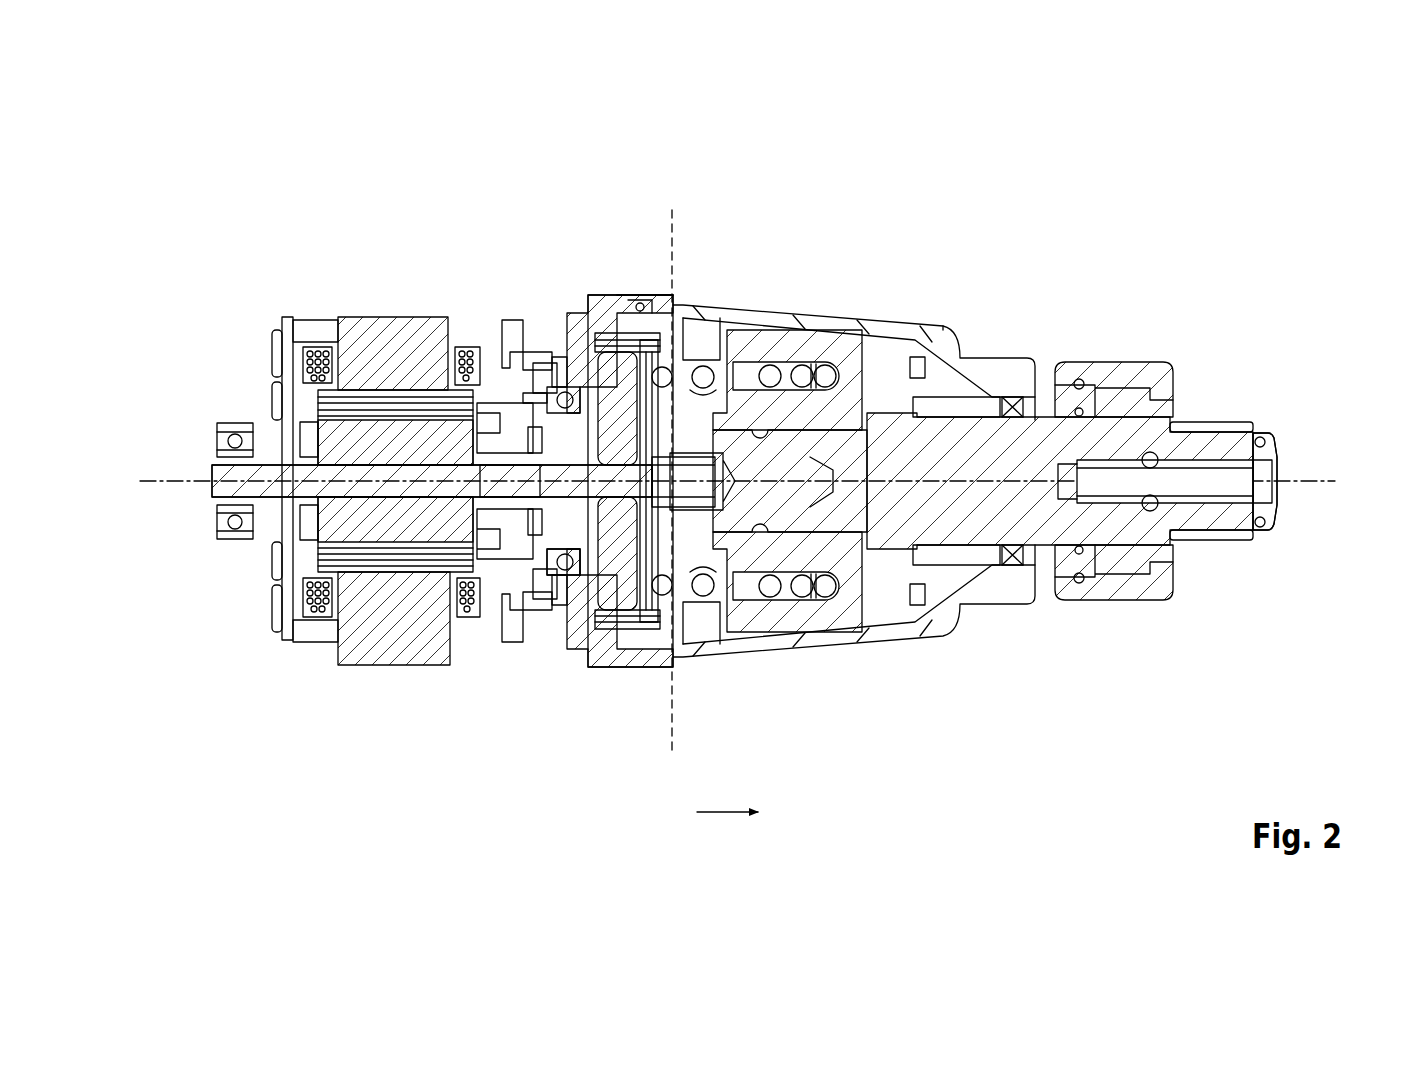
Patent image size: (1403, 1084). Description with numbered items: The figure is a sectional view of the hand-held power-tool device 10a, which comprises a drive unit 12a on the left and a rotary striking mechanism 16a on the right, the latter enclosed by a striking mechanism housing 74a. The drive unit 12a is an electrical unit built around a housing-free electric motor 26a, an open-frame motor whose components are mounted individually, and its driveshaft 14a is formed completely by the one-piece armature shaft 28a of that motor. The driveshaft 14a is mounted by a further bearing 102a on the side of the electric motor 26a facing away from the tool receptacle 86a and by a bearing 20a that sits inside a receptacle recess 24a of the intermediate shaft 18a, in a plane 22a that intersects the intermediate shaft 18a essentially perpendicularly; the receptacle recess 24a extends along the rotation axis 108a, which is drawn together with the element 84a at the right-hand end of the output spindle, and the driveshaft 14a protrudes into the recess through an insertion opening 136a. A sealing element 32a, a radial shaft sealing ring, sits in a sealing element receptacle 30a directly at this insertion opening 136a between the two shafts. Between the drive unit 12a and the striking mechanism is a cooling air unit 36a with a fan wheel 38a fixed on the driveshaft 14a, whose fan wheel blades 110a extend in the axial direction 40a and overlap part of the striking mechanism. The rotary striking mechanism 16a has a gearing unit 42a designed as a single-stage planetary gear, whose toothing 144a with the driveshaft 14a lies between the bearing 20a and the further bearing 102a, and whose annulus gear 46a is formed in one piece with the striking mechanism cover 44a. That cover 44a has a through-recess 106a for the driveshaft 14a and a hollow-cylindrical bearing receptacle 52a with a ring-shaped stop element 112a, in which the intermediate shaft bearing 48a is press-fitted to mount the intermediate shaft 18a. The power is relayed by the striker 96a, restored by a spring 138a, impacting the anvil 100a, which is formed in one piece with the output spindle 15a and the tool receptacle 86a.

The hand-held power-tool device 10a is at (1108, 208).
The drive unit 12a is at (402, 549).
The driveshaft 14a is at (283, 490).
The output spindle 15a is at (985, 510).
The rotary striking mechanism 16a is at (975, 253).
The intermediate shaft 18a is at (790, 450).
The bearing 20a is at (703, 372).
The plane 22a is at (678, 224).
The receptacle recess 24a is at (640, 600).
The housing-free electric motor 26a is at (400, 652).
The armature shaft 28a is at (432, 481).
The sealing element receptacle 30a is at (533, 573).
The sealing element 32a is at (633, 300).
The cooling air unit 36a is at (522, 198).
The fan wheel 38a is at (552, 390).
The axial direction 40a is at (715, 816).
The gearing unit 42a is at (656, 282).
The striking mechanism cover 44a is at (578, 310).
The annulus gear 46a is at (637, 637).
The intermediate shaft bearing 48a is at (580, 560).
The bearing receptacle 52a is at (517, 310).
The striking mechanism housing 74a is at (1020, 358).
The tool holder 84a is at (1300, 452).
The tool receptacle 86a is at (1220, 523).
The striker 96a is at (810, 620).
The anvil 100a is at (890, 540).
The further bearing 102a is at (236, 440).
The through-recess 106a is at (517, 466).
The rotation axis 108a is at (1265, 481).
The fan wheel blades 110a is at (537, 322).
The stop element 112a is at (567, 580).
The insertion opening 136a is at (527, 398).
The spring 138a is at (737, 585).
The toothing 144a is at (668, 600).